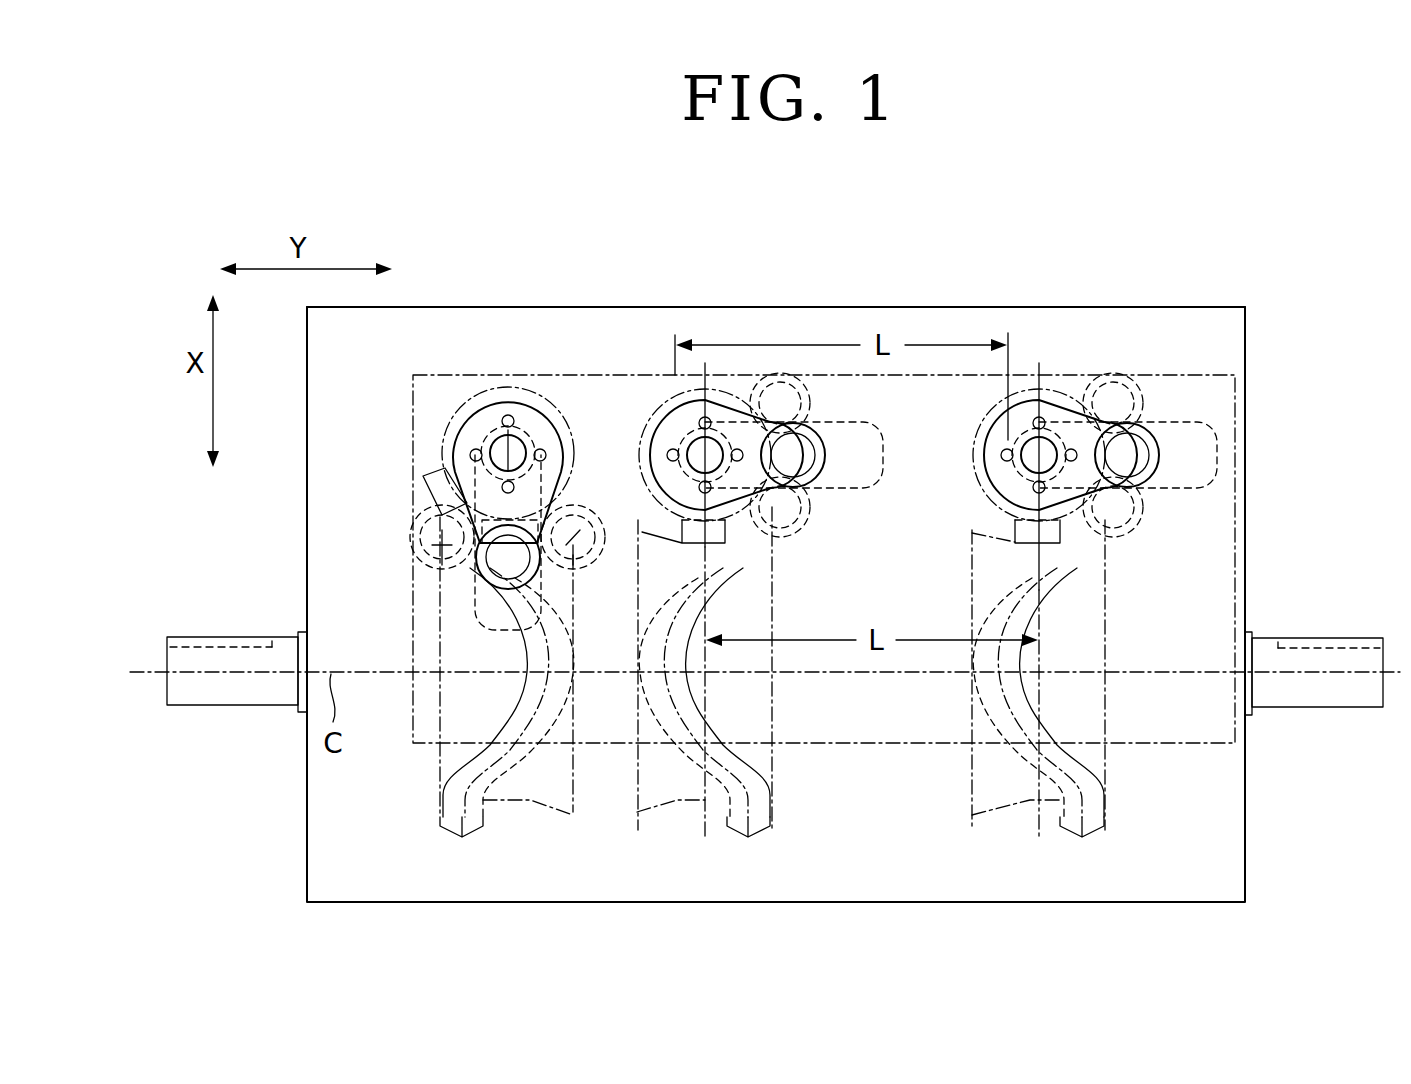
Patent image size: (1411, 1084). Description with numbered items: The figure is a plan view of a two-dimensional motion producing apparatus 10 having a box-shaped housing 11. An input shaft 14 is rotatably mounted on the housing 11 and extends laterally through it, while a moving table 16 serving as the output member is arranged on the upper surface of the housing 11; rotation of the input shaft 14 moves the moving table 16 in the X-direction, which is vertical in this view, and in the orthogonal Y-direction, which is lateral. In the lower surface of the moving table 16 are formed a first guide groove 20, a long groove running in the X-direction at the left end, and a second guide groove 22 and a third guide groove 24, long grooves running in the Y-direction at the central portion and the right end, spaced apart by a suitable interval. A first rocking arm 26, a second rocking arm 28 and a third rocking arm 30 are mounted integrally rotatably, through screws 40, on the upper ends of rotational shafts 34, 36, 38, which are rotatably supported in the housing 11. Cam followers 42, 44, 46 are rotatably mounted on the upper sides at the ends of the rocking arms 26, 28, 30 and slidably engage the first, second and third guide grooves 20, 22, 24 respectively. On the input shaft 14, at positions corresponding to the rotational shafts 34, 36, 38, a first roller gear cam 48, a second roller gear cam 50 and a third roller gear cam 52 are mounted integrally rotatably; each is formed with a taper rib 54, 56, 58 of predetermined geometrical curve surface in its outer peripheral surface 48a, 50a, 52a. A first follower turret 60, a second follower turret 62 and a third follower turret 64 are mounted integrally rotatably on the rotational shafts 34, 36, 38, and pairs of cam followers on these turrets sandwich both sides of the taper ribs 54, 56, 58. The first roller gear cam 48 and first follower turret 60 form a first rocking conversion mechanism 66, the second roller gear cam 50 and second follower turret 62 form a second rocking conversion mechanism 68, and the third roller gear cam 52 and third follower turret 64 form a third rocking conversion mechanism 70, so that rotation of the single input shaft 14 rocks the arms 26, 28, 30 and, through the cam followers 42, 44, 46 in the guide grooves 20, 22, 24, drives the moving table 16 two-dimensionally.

The two-dimensional motion producing apparatus 10 is at (960, 291).
The housing 11 is at (315, 803).
The input shaft 14 is at (200, 650).
The moving table 16 is at (851, 737).
The first guide groove 20 is at (465, 606).
The second guide groove 22 is at (848, 488).
The third guide groove 24 is at (1212, 478).
The first rocking arm 26 is at (472, 430).
The second rocking arm 28 is at (697, 400).
The third rocking arm 30 is at (1052, 412).
The rotational shaft 34 is at (515, 458).
The rotational shaft 36 is at (685, 473).
The rotational shaft 38 is at (1030, 460).
The screws 40 is at (507, 417).
The cam follower 42 is at (495, 556).
The cam follower 44 is at (825, 428).
The cam follower 46 is at (1143, 453).
The first roller gear cam 48 is at (438, 777).
The outer peripheral surface 48a is at (522, 800).
The second roller gear cam 50 is at (633, 762).
The outer peripheral surface 50a is at (688, 800).
The third roller gear cam 52 is at (970, 800).
The outer peripheral surface 52a is at (1030, 805).
The taper rib 54 is at (475, 838).
The taper rib 56 is at (735, 838).
The taper rib 58 is at (1097, 838).
The first follower turret 60 is at (572, 402).
The second follower turret 62 is at (733, 405).
The third follower turret 64 is at (1055, 400).
The first rocking conversion mechanism 66 is at (418, 487).
The second rocking conversion mechanism 68 is at (782, 540).
The third rocking conversion mechanism 70 is at (1108, 538).